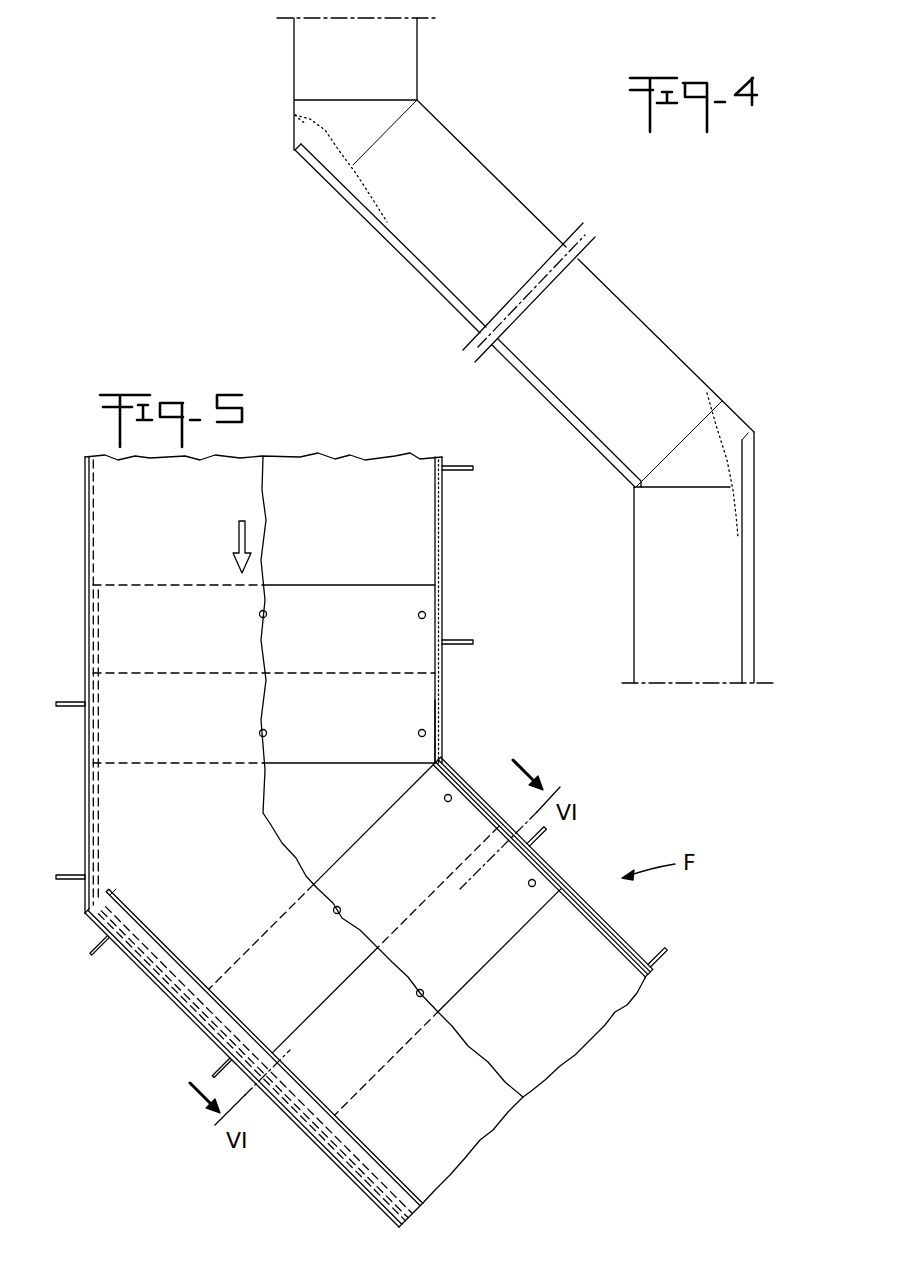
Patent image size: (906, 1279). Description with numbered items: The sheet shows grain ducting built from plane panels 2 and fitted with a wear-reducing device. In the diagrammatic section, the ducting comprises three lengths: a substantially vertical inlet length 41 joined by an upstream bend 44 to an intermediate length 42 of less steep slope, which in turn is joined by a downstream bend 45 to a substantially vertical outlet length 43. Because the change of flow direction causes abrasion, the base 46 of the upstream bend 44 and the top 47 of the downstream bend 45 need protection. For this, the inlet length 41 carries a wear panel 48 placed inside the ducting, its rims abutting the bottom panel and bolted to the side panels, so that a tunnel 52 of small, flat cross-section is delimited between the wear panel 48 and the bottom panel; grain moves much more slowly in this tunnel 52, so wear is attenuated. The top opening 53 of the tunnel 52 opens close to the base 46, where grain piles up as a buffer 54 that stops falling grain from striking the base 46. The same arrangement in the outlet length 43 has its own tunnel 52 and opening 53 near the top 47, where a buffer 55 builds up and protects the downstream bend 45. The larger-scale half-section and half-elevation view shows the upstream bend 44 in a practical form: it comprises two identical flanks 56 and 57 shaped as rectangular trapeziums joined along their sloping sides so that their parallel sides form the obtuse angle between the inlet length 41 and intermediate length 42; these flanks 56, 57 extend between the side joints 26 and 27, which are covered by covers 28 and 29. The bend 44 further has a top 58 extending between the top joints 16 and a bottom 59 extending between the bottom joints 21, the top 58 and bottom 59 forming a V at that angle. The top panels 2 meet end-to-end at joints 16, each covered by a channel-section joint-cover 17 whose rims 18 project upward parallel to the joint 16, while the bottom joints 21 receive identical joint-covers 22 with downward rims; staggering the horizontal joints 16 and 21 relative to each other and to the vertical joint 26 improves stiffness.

In FIG. 5, the plane panel 2 is at (625, 954).
In FIG. 5, the joint 16 is at (440, 553).
In FIG. 5, the joint-cover 17 is at (583, 893).
In FIG. 5, the rim 18 is at (547, 834).
In FIG. 5, the joint 21 is at (86, 800).
In FIG. 5, the joint-cover 22 is at (213, 1063).
In FIG. 5, the joint 26 is at (356, 673).
In FIG. 5, the joint 27 is at (200, 672).
In FIG. 5, the cover 28 is at (362, 740).
In FIG. 5, the cover 29 is at (213, 766).
In FIG. 4, the inlet length 41 is at (305, 58).
In FIG. 4, the intermediate length 42 is at (622, 300).
In FIG. 4, the outlet length 43 is at (755, 665).
In FIG. 4, the upstream bend 44 is at (395, 115).
In FIG. 5, the upstream bend 44 is at (398, 781).
In FIG. 4, the downstream bend 45 is at (633, 492).
In FIG. 4, the base 46 is at (293, 148).
In FIG. 4, the top 47 is at (752, 425).
In FIG. 5, the top 47 is at (250, 1037).
In FIG. 4, the wear panel 48 is at (452, 291).
In FIG. 4, the tunnel 52 is at (430, 271).
In FIG. 5, the tunnel 52 is at (187, 986).
In FIG. 4, the top opening 53 is at (303, 147).
In FIG. 5, the top opening 53 is at (95, 900).
In FIG. 4, the buffer 54 is at (296, 116).
In FIG. 4, the buffer 55 is at (718, 420).
In FIG. 5, the flank 56 is at (326, 828).
In FIG. 5, the flank 57 is at (225, 898).
In FIG. 5, the top 58 is at (443, 720).
In FIG. 5, the bottom 59 is at (83, 915).